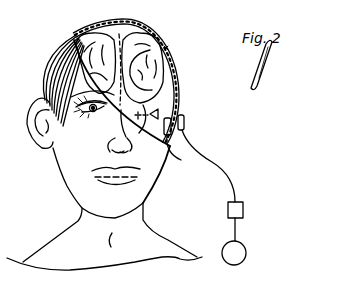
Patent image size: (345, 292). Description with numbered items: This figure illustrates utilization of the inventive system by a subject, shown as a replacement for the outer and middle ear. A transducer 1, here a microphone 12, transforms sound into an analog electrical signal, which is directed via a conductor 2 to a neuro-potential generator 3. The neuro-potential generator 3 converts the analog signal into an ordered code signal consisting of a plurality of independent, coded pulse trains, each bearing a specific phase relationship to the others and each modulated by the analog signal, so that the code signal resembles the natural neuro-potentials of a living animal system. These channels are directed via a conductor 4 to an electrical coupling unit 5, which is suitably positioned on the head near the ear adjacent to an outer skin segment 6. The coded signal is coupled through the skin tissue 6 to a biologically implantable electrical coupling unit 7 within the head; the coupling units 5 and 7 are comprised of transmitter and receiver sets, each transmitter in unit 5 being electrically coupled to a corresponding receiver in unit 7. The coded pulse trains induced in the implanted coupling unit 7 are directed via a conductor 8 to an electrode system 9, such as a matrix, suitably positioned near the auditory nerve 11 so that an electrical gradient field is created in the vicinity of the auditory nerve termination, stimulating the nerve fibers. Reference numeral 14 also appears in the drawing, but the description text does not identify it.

The transducer 1 is at (246, 256).
The microphone 12 is at (263, 254).
The conductor 2 is at (236, 230).
The neuro-potential generator 3 is at (243, 212).
The conductor 4 is at (237, 190).
The electrical coupling unit 5 is at (185, 121).
The outer skin segment 6 is at (178, 63).
The biologically implantable electrical coupling unit 7 is at (175, 156).
The conductor 8 is at (172, 122).
The electrode system 9 is at (158, 114).
The auditory nerve 11 is at (139, 139).
The skull opening / cap 14 is at (166, 48).